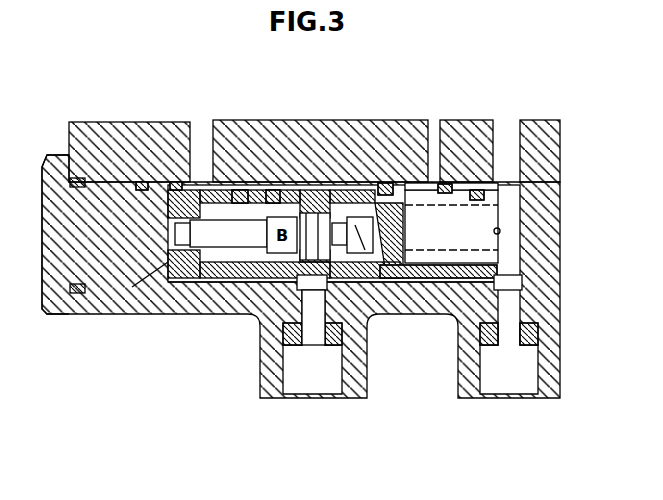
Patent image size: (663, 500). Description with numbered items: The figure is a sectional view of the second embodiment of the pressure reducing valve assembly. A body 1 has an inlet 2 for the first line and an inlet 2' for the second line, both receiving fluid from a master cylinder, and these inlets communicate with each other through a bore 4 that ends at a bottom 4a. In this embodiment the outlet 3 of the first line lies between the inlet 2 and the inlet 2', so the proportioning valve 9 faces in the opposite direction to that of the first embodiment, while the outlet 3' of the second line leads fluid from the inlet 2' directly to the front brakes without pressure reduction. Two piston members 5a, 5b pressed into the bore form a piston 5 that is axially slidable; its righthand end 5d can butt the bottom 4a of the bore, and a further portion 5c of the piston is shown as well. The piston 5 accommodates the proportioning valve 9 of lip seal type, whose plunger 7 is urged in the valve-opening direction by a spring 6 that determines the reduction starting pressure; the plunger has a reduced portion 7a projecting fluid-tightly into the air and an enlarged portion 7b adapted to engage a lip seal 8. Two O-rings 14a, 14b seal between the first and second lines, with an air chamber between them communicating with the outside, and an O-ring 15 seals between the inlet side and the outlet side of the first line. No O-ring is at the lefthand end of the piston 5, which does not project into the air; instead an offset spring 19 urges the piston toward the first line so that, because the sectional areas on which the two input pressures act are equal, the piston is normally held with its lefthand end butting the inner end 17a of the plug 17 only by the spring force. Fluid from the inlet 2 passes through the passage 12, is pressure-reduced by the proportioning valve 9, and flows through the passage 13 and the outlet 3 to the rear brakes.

The body 1 is at (547, 313).
The inlet 2 is at (281, 126).
The inlet 2' is at (538, 124).
The outlet 3 is at (312, 374).
The outlet 3' is at (509, 371).
The bore 4 is at (505, 133).
The bottom of the bore 4a is at (500, 231).
The piston 5 is at (360, 190).
The piston member 5a is at (453, 188).
The piston member 5b is at (175, 182).
The seal 5c is at (140, 182).
The righthand end of the piston 5d is at (372, 266).
The spring 6 is at (243, 318).
The plunger 7 is at (300, 192).
The reduced portion 7a is at (177, 318).
The enlarged portion 7b is at (372, 300).
The lip seal 8 is at (341, 192).
The proportioning valve 9 is at (342, 292).
The passage 12 is at (240, 192).
The passage 13 is at (418, 300).
The O-ring 14a is at (477, 195).
The O-ring 14b is at (386, 192).
The O-ring 15 is at (272, 192).
The plug 17 is at (56, 318).
The inner end of the plug 17a is at (111, 316).
The offset spring 19 is at (485, 200).